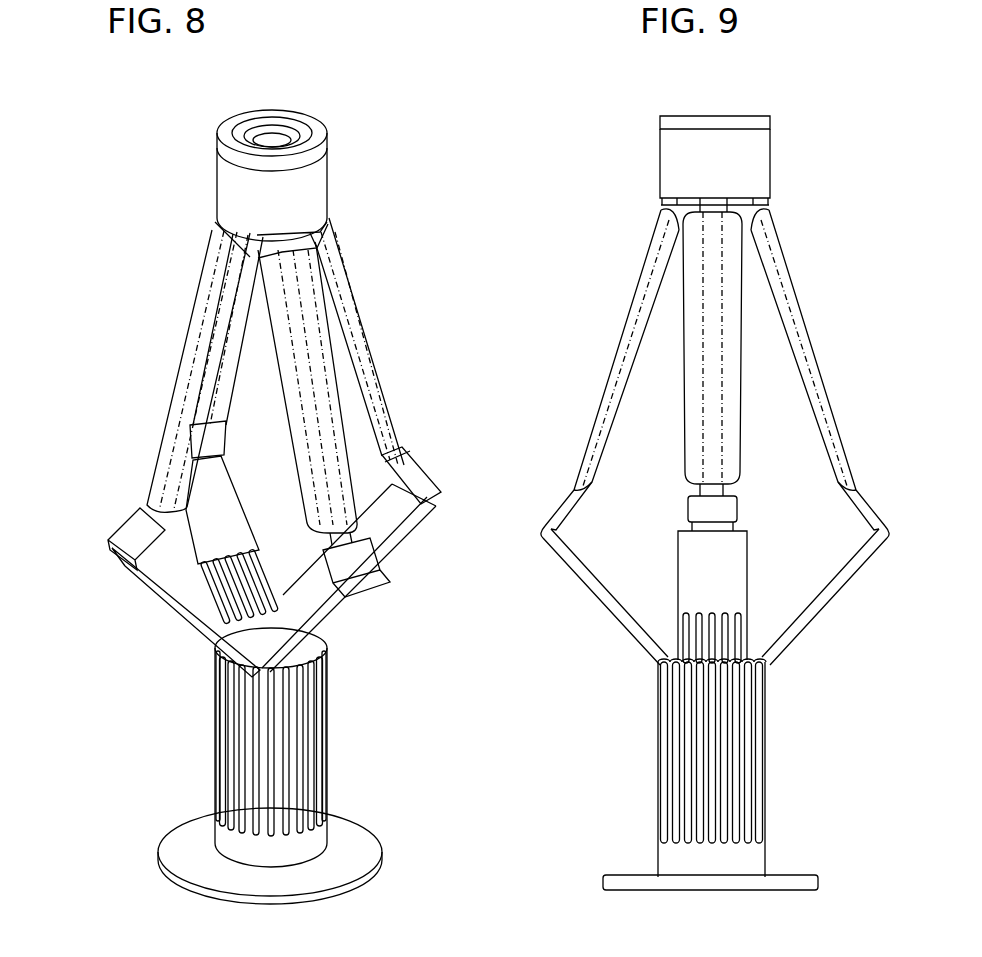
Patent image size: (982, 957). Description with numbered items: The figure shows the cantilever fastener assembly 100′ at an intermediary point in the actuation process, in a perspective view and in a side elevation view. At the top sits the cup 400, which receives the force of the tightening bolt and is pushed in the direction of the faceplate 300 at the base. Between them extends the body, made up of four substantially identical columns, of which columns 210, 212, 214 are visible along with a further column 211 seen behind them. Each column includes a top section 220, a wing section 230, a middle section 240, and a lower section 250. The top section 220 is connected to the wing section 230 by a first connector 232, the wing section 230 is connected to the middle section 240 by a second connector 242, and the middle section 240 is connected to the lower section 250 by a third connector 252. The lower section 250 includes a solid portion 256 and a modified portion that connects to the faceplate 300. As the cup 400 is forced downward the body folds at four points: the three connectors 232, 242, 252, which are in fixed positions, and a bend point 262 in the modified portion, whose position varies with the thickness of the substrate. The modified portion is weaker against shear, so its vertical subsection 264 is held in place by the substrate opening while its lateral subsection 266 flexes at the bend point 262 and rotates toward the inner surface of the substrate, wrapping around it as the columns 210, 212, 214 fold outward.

In FIG. 8, the fastener assembly 100′ is at (382, 96).
In FIG. 9, the fastener assembly 100′ is at (852, 91).
In FIG. 8, the cup 400 is at (325, 124).
In FIG. 9, the cup 400 is at (660, 116).
In FIG. 8, the top section 220 is at (317, 192).
In FIG. 9, the top section 220 is at (660, 176).
In FIG. 8, the wing section 230 is at (352, 288).
In FIG. 9, the wing section 230 is at (630, 303).
In FIG. 8, the first connector 232 is at (240, 244).
In FIG. 8, the column 210 is at (198, 371).
In FIG. 8, the rear arm 211 is at (226, 346).
In FIG. 8, the column 212 is at (324, 421).
In FIG. 8, the column 214 is at (366, 330).
In FIG. 8, the middle section 240 is at (422, 482).
In FIG. 9, the middle section 240 is at (558, 512).
In FIG. 8, the second connector 242 is at (147, 510).
In FIG. 8, the lower section 250 is at (192, 842).
In FIG. 8, the third connector 252 is at (112, 550).
In FIG. 8, the solid portion 256 is at (345, 612).
In FIG. 9, the solid portion 256 is at (572, 557).
In FIG. 8, the bend point 262 is at (325, 655).
In FIG. 9, the bend point 262 is at (768, 662).
In FIG. 8, the vertical subsection 264 is at (328, 697).
In FIG. 9, the vertical subsection 264 is at (658, 738).
In FIG. 8, the lateral subsection 266 is at (260, 582).
In FIG. 9, the lateral subsection 266 is at (647, 617).
In FIG. 8, the faceplate 300 is at (353, 852).
In FIG. 9, the faceplate 300 is at (620, 878).